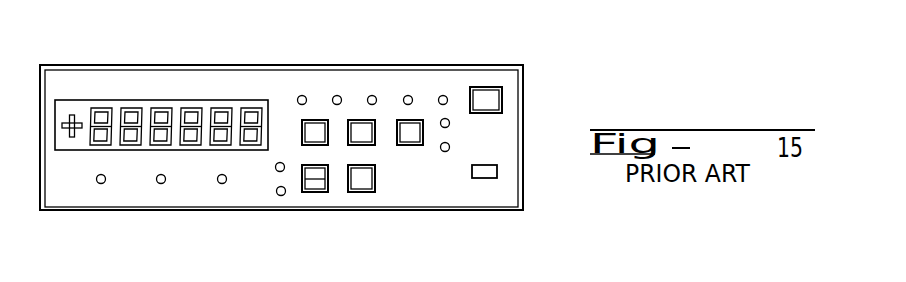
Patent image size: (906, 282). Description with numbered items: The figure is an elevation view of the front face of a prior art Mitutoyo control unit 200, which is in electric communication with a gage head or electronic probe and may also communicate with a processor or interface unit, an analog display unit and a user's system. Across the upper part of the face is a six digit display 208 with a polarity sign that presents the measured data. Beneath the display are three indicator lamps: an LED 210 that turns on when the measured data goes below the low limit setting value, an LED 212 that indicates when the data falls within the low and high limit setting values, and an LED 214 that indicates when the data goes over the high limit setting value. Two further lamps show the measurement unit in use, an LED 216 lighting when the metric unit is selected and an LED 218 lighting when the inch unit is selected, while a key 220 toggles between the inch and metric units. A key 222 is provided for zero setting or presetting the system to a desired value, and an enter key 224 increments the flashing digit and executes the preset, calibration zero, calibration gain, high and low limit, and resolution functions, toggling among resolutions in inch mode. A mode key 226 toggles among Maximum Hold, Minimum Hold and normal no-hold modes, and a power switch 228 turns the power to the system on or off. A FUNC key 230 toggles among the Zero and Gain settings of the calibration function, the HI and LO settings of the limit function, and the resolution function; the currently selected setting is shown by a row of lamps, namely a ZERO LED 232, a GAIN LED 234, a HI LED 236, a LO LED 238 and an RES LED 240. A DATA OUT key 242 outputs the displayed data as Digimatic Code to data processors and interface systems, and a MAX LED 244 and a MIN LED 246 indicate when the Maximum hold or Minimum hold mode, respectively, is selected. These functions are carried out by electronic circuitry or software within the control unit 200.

The control unit 200 is at (62, 65).
The six digit display 208 is at (149, 101).
The LED 210 is at (96, 179).
The LED 212 is at (161, 184).
The LED 214 is at (226, 177).
The LED 216 is at (280, 196).
The LED 218 is at (276, 169).
The key 220 is at (328, 182).
The key 222 is at (375, 180).
The enter key 224 is at (376, 134).
The mode key 226 is at (398, 146).
The power switch 228 is at (497, 171).
The FUNC key 230 is at (303, 133).
The ZERO LED 232 is at (297, 99).
The GAIN LED 234 is at (333, 99).
The HI LED 236 is at (370, 96).
The LO LED 238 is at (413, 99).
The RES LED 240 is at (448, 99).
The DATA OUT key 242 is at (502, 92).
The MAX LED 244 is at (450, 123).
The MIN LED 246 is at (450, 148).